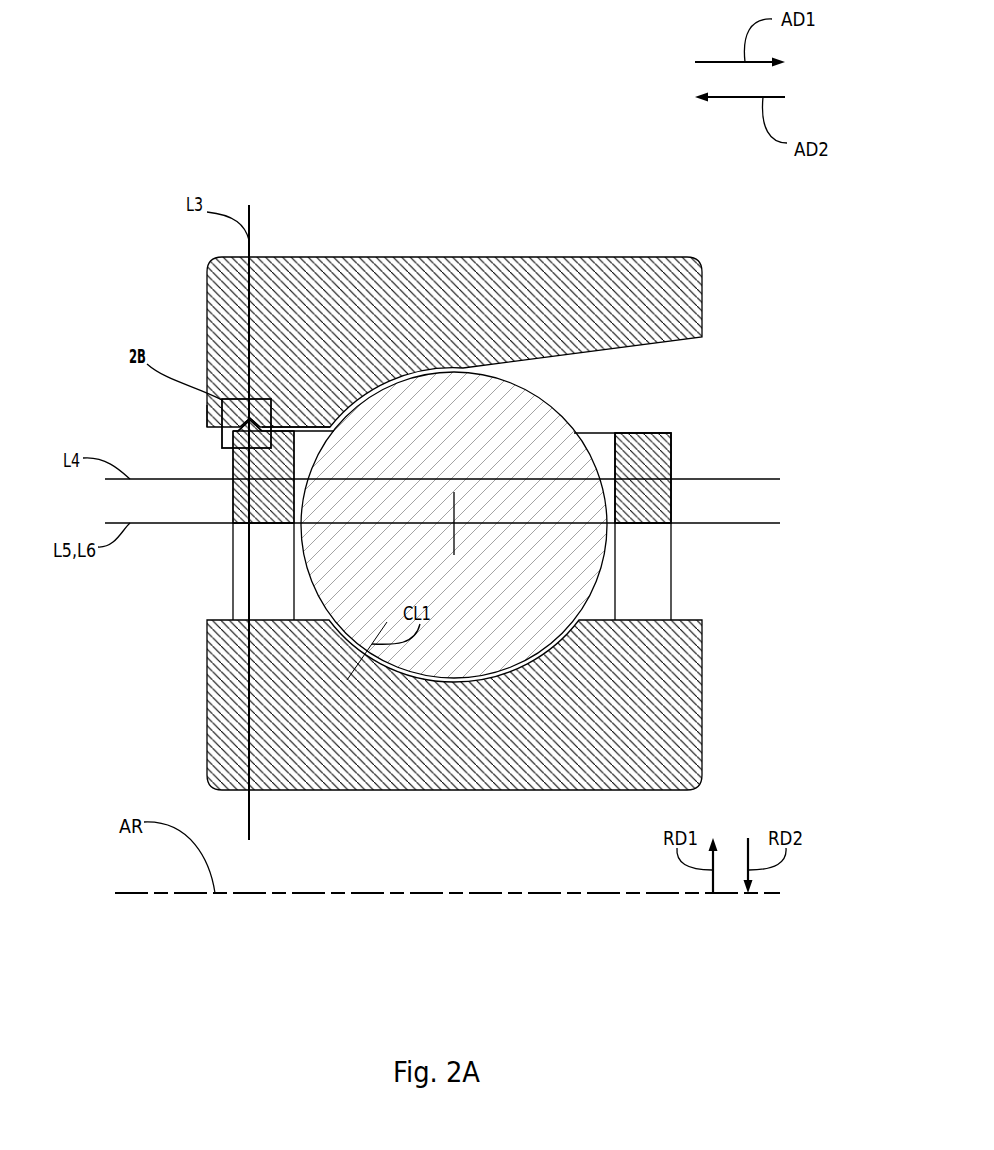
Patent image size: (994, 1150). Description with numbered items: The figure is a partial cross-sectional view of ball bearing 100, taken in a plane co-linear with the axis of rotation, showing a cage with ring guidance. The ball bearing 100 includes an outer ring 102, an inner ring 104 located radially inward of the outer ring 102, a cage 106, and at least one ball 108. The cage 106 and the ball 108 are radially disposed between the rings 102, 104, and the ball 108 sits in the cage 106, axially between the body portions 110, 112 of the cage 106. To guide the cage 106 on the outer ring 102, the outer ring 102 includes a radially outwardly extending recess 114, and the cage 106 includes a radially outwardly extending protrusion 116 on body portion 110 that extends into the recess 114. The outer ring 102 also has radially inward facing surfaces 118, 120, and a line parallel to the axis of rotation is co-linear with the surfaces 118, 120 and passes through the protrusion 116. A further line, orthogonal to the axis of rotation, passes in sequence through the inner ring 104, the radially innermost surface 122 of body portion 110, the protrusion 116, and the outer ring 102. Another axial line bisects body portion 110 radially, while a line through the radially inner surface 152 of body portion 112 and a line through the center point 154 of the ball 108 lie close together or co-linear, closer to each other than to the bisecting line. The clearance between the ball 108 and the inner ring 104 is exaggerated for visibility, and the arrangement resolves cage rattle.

The ball bearing 100 is at (651, 208).
The outer ring 102 is at (509, 255).
The inner ring 104 is at (704, 647).
The cage 106 is at (682, 501).
The ball 108 is at (562, 413).
The body portion 110 is at (231, 505).
The body portion 112 is at (671, 455).
The recess 114 is at (248, 421).
The protrusion 116 is at (242, 431).
The surface 118 is at (210, 417).
The surface 120 is at (290, 425).
The radially innermost surface 122 is at (240, 523).
The radially inner surface 152 is at (647, 523).
The center point 154 is at (455, 525).